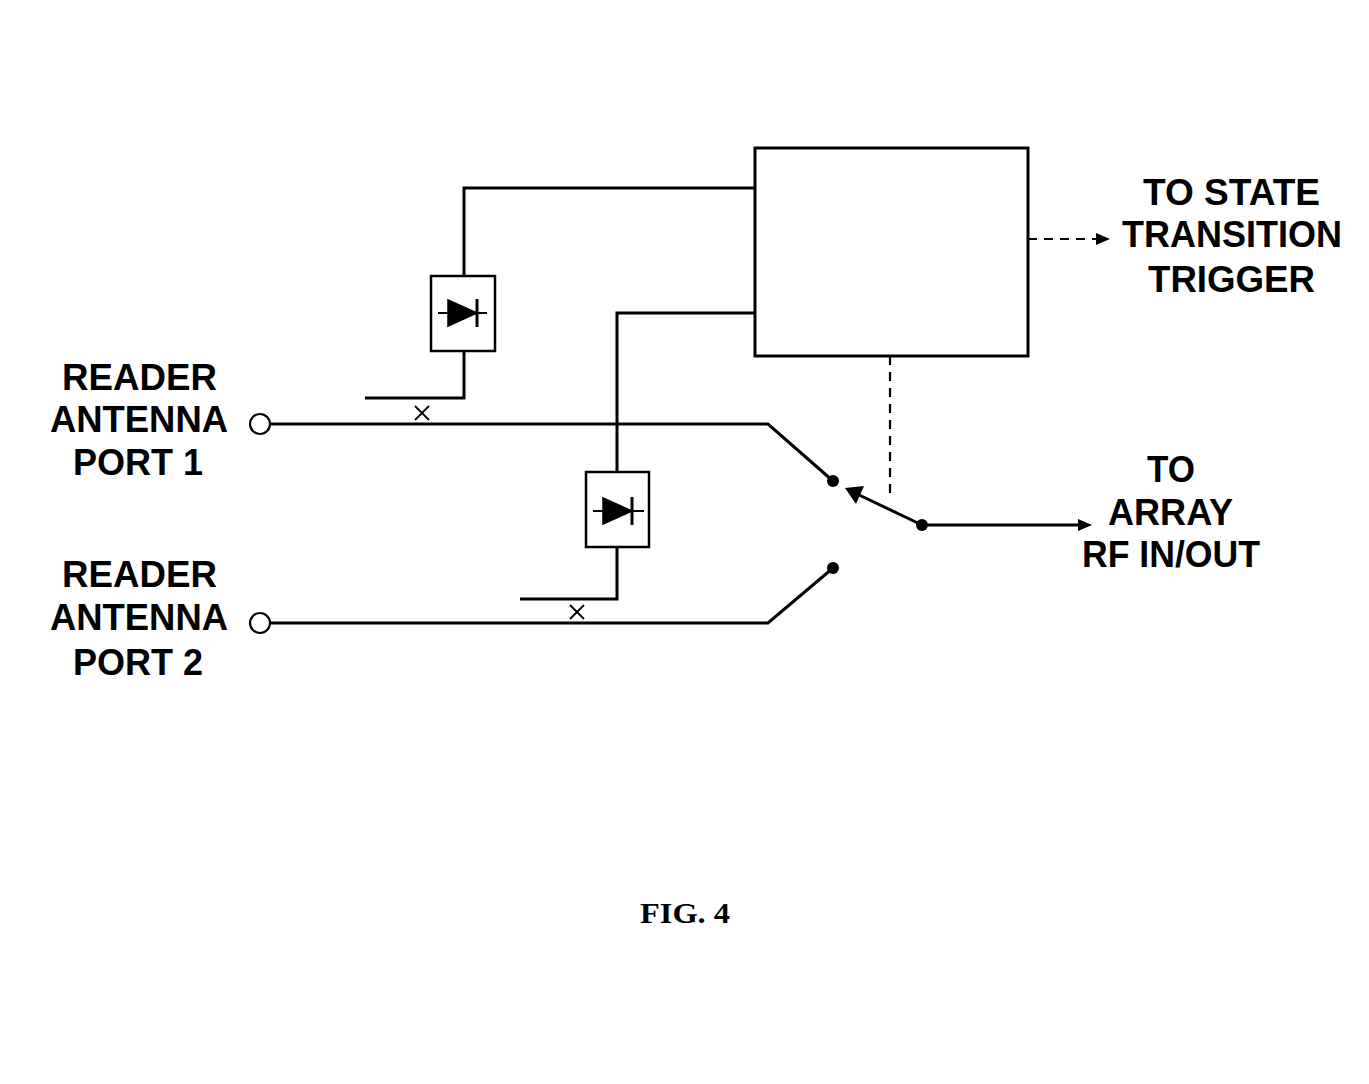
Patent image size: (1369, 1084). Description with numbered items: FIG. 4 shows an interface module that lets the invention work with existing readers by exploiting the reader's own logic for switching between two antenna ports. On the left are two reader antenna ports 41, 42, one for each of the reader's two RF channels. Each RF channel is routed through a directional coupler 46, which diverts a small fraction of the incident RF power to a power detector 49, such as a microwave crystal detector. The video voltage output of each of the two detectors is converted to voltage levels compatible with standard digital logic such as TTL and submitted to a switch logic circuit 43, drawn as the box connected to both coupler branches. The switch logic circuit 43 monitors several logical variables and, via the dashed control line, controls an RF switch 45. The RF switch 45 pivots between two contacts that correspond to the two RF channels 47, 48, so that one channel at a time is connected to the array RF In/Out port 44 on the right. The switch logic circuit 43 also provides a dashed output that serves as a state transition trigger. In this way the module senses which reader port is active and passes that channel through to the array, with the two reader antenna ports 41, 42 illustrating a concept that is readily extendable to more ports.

The reader antenna port 41 is at (255, 451).
The reader antenna port 42 is at (255, 603).
The switch logic circuit 43 is at (937, 135).
The array RF In/Out port 44 is at (1126, 511).
The RF switch 45 is at (900, 528).
The directional coupler 46 is at (428, 397).
The RF channel 47 is at (819, 492).
The RF channel 48 is at (820, 556).
The power detector 49 is at (500, 303).